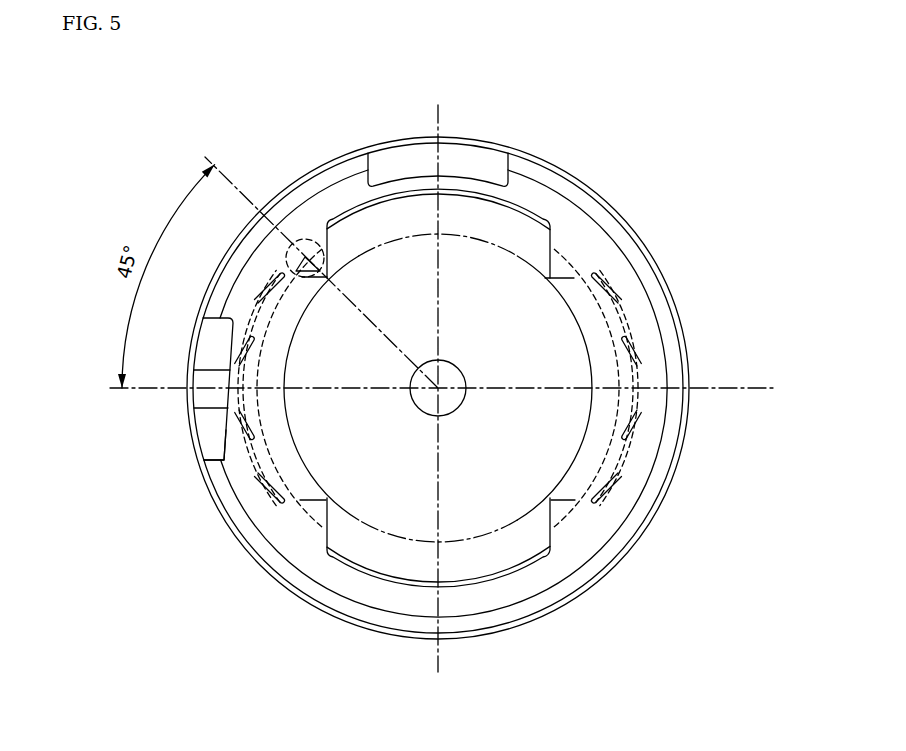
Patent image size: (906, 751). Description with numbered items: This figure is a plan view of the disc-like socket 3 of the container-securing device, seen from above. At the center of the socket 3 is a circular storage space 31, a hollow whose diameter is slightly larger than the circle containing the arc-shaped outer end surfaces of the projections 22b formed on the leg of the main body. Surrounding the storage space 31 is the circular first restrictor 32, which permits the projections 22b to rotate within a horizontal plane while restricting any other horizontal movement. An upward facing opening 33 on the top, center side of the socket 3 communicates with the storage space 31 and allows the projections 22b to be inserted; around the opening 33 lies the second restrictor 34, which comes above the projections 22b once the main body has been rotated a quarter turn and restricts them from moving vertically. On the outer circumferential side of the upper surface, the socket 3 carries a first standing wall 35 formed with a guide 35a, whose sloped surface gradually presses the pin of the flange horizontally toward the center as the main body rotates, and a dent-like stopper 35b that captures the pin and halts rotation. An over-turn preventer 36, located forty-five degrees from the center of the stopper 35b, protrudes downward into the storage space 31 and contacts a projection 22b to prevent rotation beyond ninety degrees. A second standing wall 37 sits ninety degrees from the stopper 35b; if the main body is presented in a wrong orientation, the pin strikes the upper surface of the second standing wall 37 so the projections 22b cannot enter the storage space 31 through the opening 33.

The socket 3 is at (298, 142).
The projections 22b is at (617, 300).
The storage space 31 is at (605, 412).
The first restrictor 32 is at (640, 356).
The opening 33 is at (553, 254).
The second restrictor 34 is at (597, 450).
The first standing wall 35 is at (190, 320).
The guide 35a is at (212, 443).
The stopper 35b is at (207, 385).
The over-turn preventer 36 is at (305, 239).
The second standing wall 37 is at (465, 165).